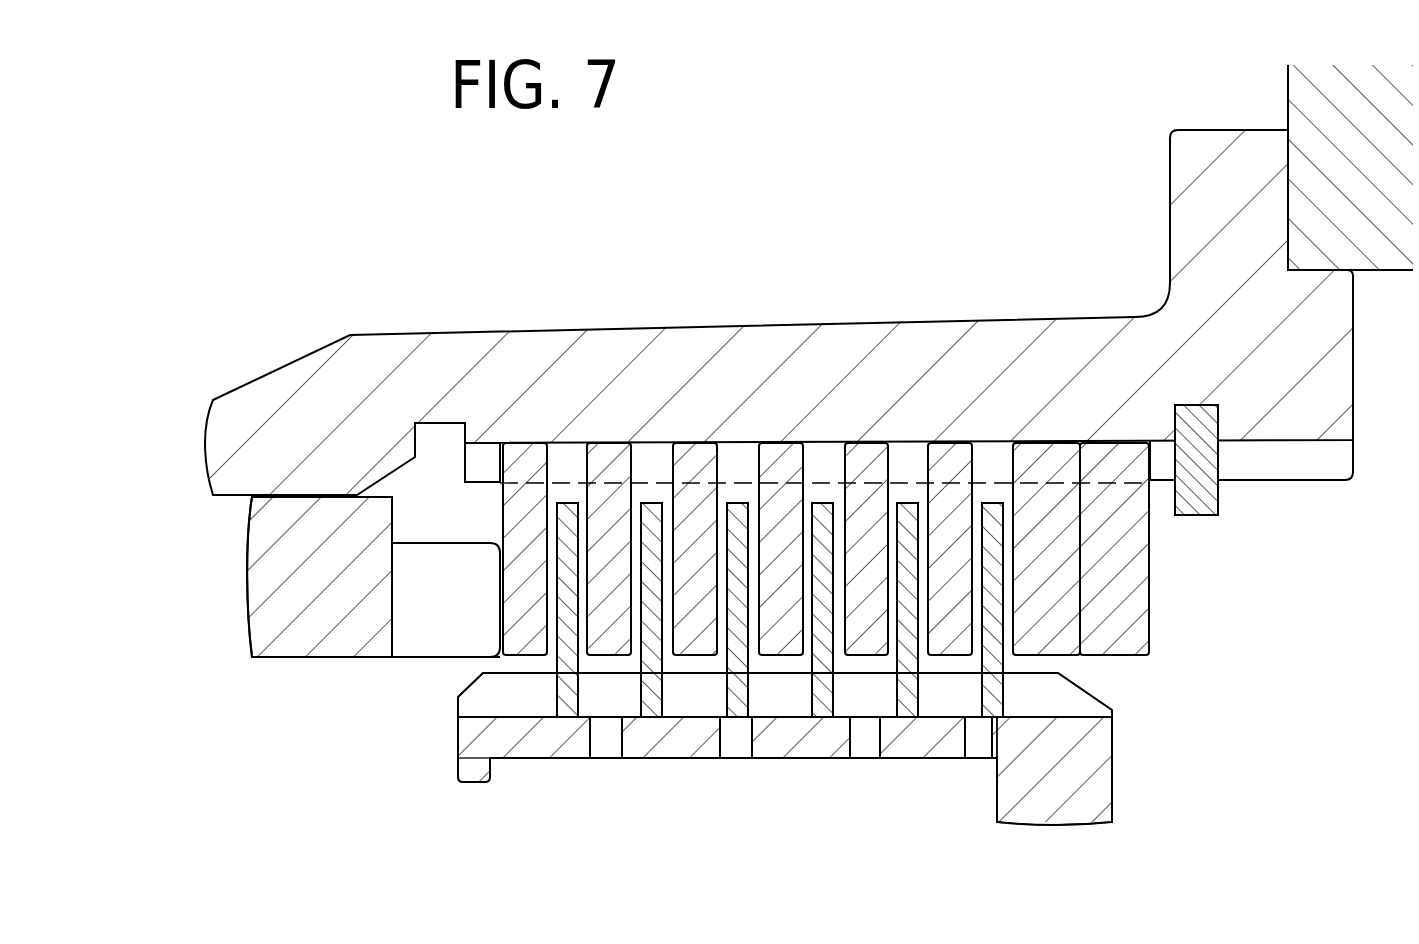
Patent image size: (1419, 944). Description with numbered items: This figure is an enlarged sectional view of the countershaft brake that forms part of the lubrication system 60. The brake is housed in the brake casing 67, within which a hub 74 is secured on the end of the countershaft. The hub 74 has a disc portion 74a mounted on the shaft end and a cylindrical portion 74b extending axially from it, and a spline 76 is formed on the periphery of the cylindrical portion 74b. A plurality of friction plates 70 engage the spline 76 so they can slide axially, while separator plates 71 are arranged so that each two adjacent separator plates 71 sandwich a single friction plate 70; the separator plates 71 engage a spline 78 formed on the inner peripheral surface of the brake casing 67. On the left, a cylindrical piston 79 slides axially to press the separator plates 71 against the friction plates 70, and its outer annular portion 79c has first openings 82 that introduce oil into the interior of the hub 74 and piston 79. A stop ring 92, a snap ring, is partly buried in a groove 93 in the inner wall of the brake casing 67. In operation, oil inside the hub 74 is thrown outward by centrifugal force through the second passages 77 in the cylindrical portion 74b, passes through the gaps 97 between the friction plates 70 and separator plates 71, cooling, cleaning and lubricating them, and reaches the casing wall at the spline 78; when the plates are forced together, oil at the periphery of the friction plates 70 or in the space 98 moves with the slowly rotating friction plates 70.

The lubrication system 60 is at (767, 222).
The brake casing 67 is at (893, 322).
The friction plates 70 is at (658, 515).
The separator plates 71 is at (608, 467).
The hub 74 is at (802, 759).
The disc portion 74a is at (1087, 755).
The cylindrical portion 74b is at (677, 745).
The spline 76 is at (483, 692).
The second passages 77 is at (607, 745).
The spline 78 is at (487, 467).
The cylindrical piston 79 is at (272, 684).
The outer annular portion 79c is at (340, 627).
The first openings 82 is at (450, 622).
The stop ring 92 is at (1218, 513).
The groove 93 is at (1200, 413).
The gaps 97 is at (753, 517).
The space 98 is at (1007, 480).